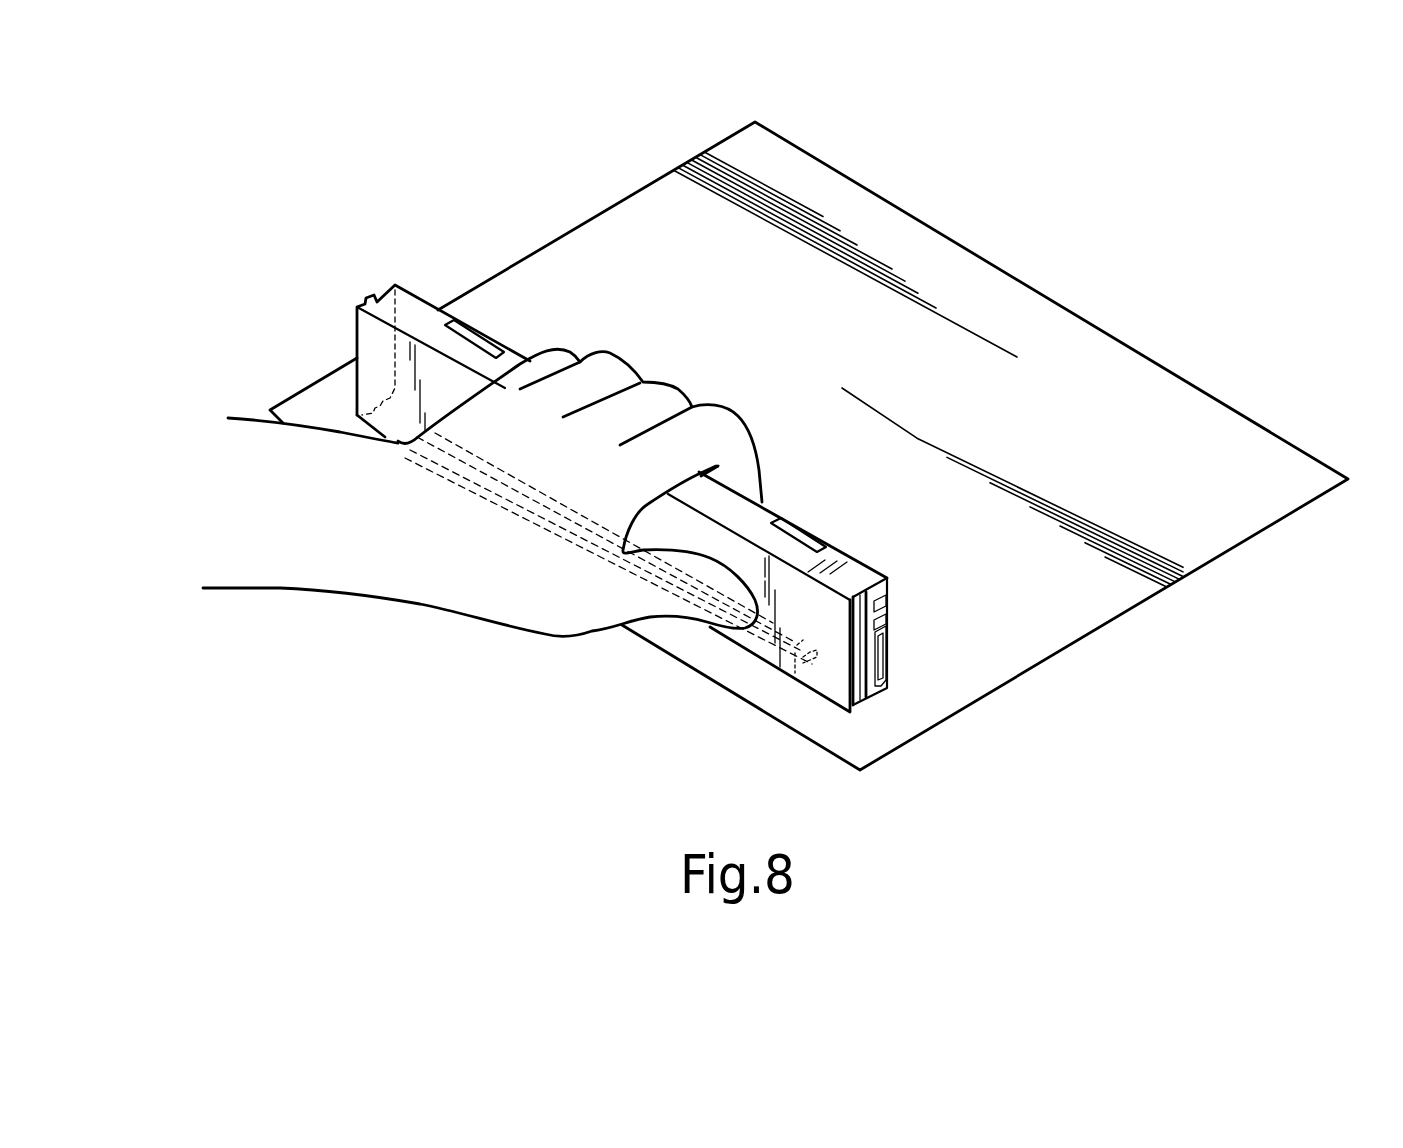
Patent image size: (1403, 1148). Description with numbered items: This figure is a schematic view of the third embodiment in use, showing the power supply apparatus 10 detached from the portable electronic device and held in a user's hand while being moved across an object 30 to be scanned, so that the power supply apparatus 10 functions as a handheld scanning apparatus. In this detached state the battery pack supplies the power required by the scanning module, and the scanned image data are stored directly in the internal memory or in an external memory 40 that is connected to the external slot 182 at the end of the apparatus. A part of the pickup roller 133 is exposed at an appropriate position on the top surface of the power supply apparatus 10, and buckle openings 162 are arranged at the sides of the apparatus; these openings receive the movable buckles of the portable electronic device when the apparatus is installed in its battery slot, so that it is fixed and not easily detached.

The power supply apparatus 10 is at (840, 543).
The object to be scanned 30 is at (637, 235).
The pickup roller 133 is at (808, 545).
The buckle opening 162 is at (888, 599).
The external slot 182 is at (888, 620).
The external memory 40 is at (888, 668).